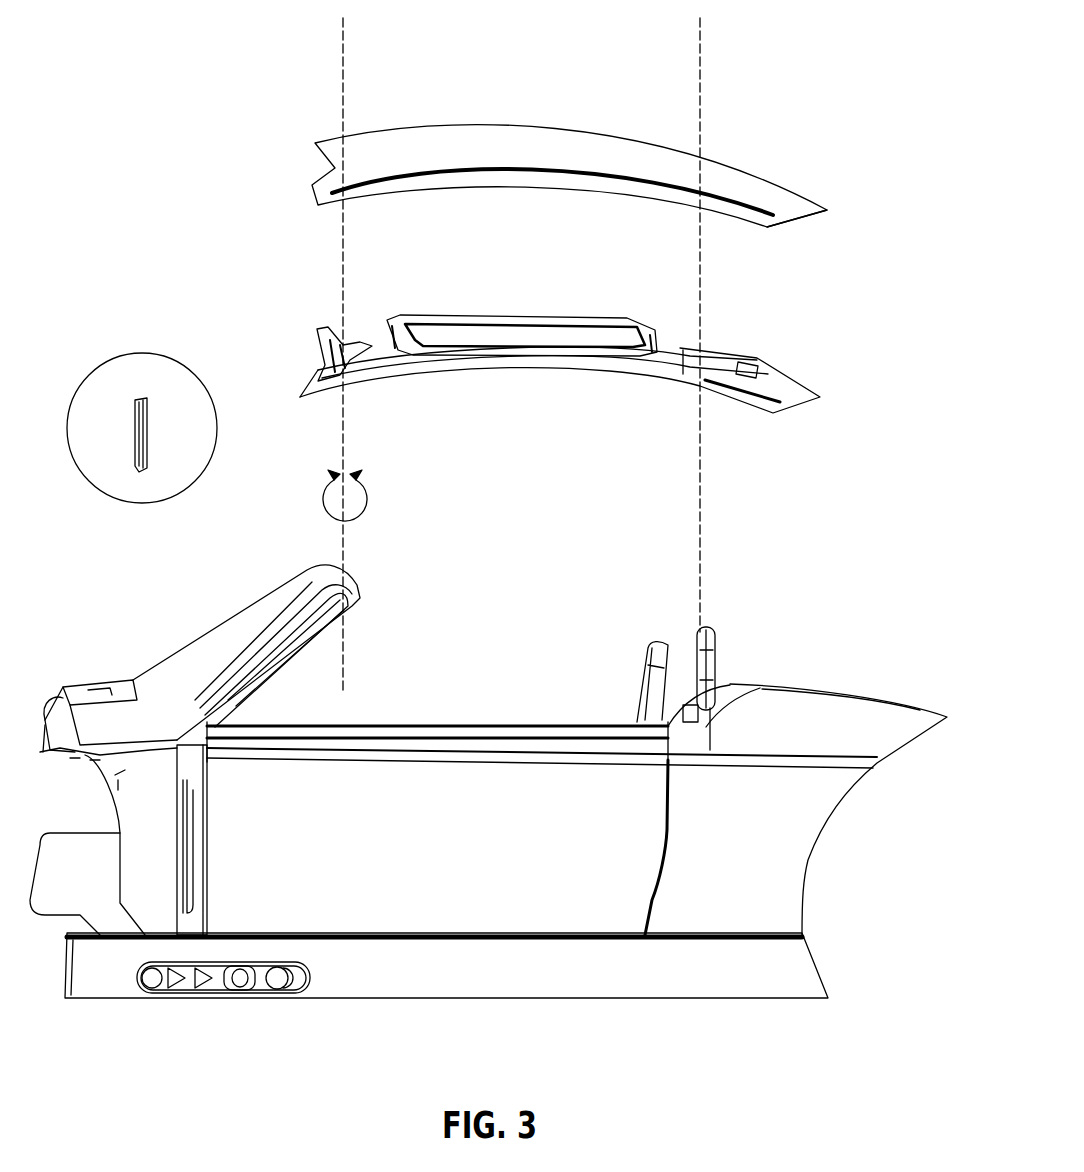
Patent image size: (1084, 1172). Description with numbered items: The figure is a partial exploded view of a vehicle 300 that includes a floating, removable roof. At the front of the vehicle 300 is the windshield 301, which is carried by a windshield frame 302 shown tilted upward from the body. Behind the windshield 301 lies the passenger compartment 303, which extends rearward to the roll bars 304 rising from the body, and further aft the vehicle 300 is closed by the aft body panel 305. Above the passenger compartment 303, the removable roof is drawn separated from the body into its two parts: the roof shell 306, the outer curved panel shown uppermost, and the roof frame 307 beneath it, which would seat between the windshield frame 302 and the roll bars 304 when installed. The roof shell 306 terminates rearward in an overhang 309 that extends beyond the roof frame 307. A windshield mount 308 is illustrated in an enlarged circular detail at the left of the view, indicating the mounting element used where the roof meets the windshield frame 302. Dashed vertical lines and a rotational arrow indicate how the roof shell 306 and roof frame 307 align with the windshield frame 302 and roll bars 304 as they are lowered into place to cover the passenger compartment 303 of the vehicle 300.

The vehicle 300 is at (184, 97).
The windshield 301 is at (190, 640).
The windshield frame 302 is at (256, 625).
The passenger compartment 303 is at (510, 706).
The roll bars 304 is at (715, 636).
The aft body panel 305 is at (830, 688).
The roof shell 306 is at (545, 125).
The roof frame 307 is at (508, 310).
The windshield mount 308 is at (135, 407).
The overhang 309 is at (807, 223).